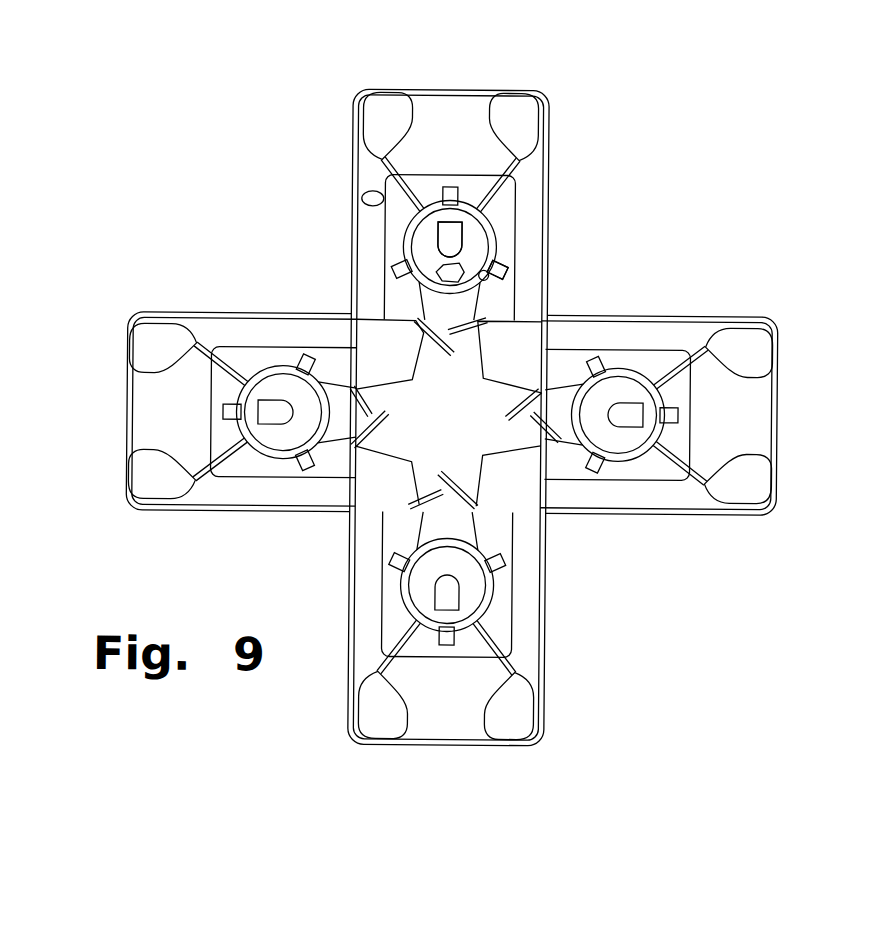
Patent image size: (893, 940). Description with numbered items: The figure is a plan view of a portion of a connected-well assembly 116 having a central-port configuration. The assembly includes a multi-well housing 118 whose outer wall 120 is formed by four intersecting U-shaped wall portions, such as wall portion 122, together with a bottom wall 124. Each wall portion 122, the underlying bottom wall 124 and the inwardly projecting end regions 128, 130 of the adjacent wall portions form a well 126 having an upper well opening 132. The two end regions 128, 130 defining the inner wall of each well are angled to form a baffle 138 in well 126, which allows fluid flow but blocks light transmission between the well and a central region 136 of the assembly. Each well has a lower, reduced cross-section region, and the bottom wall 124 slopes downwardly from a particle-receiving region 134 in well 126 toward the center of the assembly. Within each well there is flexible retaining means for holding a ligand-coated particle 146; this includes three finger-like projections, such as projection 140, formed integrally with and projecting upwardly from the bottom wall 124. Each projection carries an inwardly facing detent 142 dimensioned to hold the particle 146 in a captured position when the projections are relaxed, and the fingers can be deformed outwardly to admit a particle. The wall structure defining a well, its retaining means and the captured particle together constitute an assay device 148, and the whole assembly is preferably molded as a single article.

The connected-well assembly 116 is at (553, 157).
The multi-well housing 118 is at (703, 311).
The outer wall 120 is at (582, 318).
The wall portion 122 is at (354, 245).
The bottom wall 124 is at (468, 469).
The well 126 is at (465, 118).
The end region 128 is at (490, 325).
The end region 130 is at (368, 324).
The upper well opening 132 is at (362, 200).
The particle-receiving region 134 is at (436, 272).
The central region 136 is at (424, 437).
The baffle 138 is at (440, 352).
The finger-like projection 140 is at (504, 272).
The detent 142 is at (489, 283).
The ligand-coated particle 146 is at (468, 234).
The assay device 148 is at (318, 570).